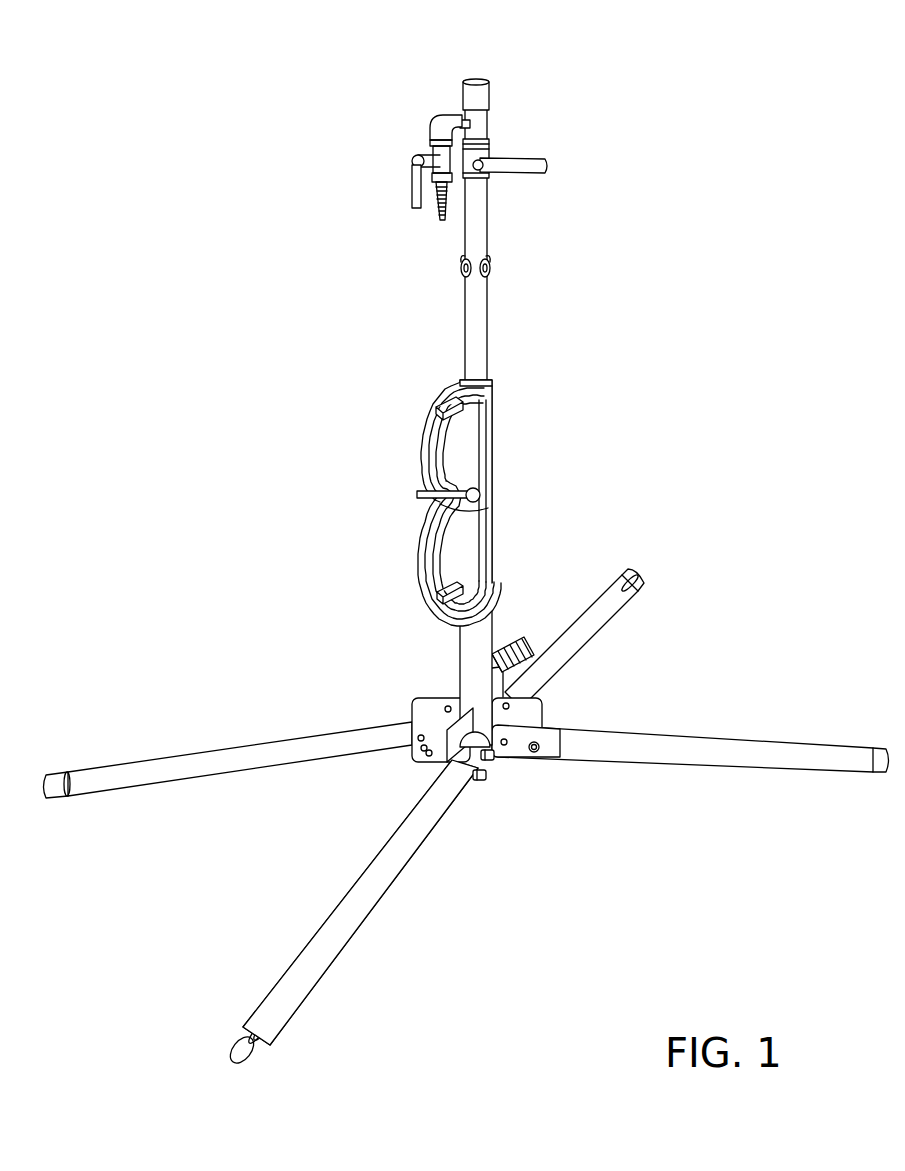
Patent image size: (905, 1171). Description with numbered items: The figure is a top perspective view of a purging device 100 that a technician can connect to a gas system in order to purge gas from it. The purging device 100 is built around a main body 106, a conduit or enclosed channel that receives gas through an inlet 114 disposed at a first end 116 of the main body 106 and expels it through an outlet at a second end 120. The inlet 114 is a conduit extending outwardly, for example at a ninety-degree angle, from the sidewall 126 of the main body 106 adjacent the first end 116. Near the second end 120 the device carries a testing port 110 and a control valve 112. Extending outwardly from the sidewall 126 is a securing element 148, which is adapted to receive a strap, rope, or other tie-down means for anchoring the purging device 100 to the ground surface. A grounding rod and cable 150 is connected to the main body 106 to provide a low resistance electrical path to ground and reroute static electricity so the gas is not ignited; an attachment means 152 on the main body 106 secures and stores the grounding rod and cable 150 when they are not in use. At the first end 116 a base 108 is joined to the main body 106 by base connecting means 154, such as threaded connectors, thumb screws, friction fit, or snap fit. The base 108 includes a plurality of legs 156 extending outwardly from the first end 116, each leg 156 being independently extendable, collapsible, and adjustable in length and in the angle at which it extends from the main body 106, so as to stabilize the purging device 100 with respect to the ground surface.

The purging device 100 is at (690, 283).
The main body 106 is at (415, 577).
The base 108 is at (174, 689).
The testing port 110 is at (433, 122).
The control valve 112 is at (488, 161).
The inlet 114 is at (511, 636).
The first end 116 is at (461, 666).
The second end 120 is at (478, 97).
The sidewall 126 is at (482, 352).
The securing element 148 is at (491, 262).
The grounding rod and cable 150 is at (432, 460).
The attachment means 152 is at (437, 413).
The base connecting means 154 is at (485, 778).
The legs 156 is at (590, 600).